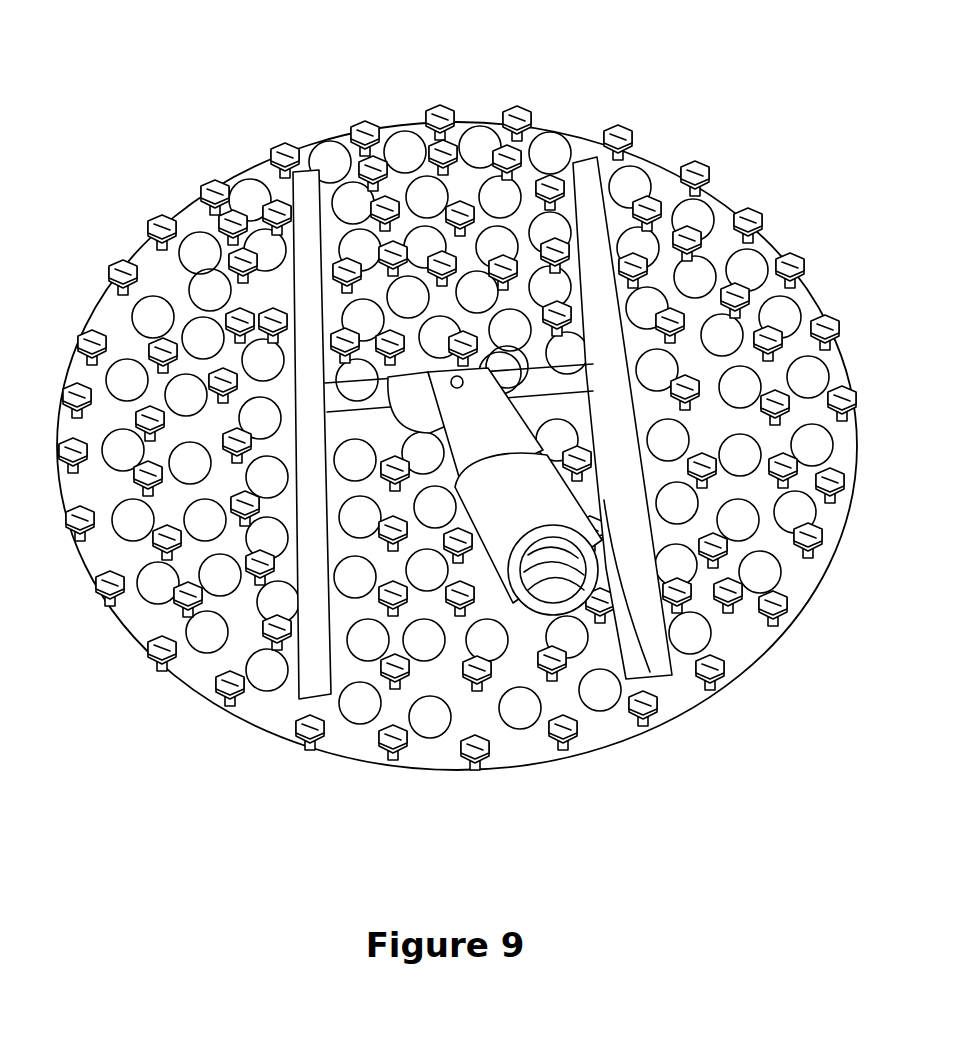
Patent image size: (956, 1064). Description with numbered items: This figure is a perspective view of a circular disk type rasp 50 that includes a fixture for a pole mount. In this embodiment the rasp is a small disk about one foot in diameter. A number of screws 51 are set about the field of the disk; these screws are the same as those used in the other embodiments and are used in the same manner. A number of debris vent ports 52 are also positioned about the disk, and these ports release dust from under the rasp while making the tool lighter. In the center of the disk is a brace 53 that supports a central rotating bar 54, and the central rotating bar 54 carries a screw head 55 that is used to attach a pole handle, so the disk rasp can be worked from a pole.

The circular disk type rasp 50 is at (180, 93).
The screws 51 is at (512, 104).
The debris vent ports 52 is at (145, 598).
The brace 53 is at (304, 218).
The central rotating bar 54 is at (330, 395).
The screw head 55 is at (672, 676).